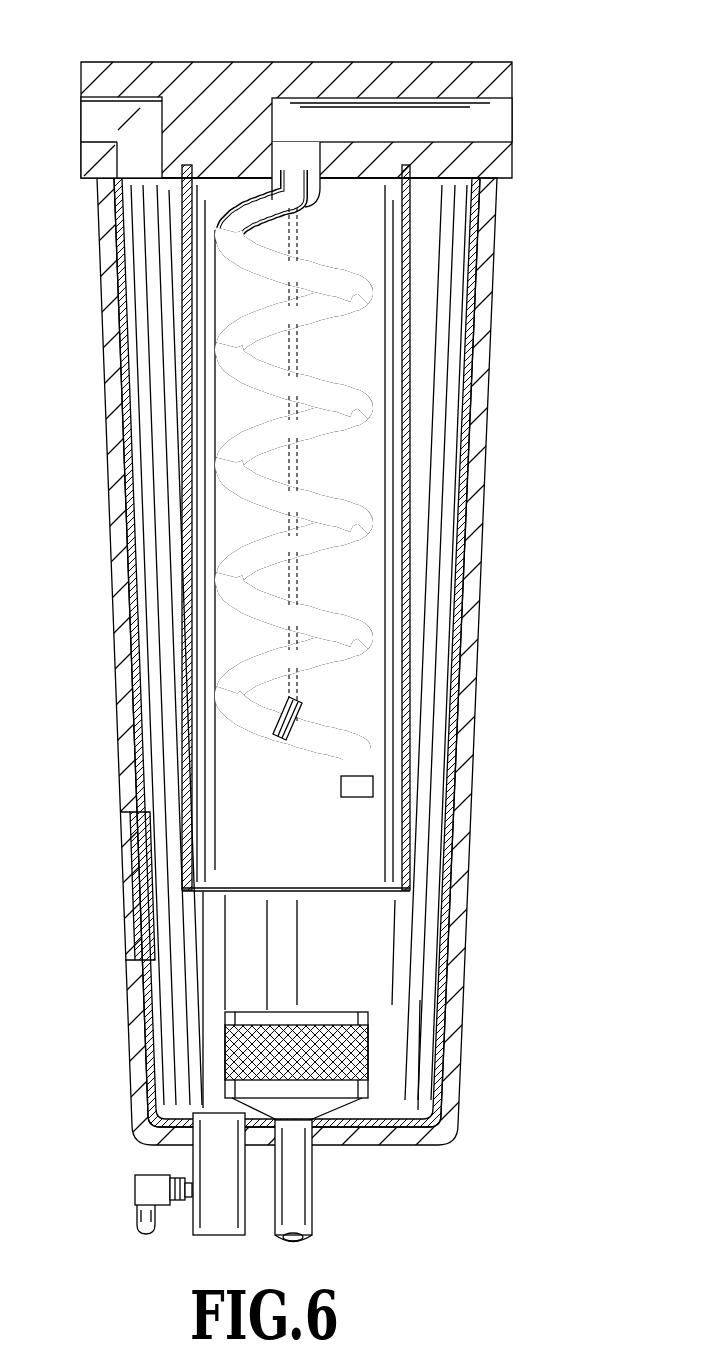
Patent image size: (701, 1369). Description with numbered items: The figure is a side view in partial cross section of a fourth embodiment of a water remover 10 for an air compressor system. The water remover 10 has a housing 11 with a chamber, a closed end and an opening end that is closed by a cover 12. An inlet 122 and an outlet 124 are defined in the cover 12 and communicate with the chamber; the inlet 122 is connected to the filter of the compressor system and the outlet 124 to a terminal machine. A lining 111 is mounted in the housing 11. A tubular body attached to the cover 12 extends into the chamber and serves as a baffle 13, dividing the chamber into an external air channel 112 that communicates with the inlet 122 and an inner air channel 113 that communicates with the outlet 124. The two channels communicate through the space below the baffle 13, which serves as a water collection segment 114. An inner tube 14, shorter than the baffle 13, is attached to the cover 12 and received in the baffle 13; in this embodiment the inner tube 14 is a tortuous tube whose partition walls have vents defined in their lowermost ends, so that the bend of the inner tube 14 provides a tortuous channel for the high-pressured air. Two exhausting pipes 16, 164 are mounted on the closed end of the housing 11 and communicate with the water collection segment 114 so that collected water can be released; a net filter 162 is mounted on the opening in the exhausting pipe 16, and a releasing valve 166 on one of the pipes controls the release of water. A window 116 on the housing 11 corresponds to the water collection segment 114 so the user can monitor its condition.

The water remover 10 is at (318, 621).
The housing 11 is at (470, 560).
The cover 12 is at (329, 101).
The baffle 13 is at (403, 278).
The inner tube 14 is at (382, 474).
The exhausting pipe 16 is at (297, 1182).
The lining 111 is at (452, 826).
The external air channel 112 is at (455, 447).
The inner air channel 113 is at (246, 870).
The water collection segment 114 is at (403, 957).
The window 116 is at (138, 850).
The inlet 122 is at (115, 112).
The outlet 124 is at (497, 127).
The net filter 162 is at (368, 1048).
The exhausting pipe 164 is at (212, 1118).
The releasing valve 166 is at (155, 1185).